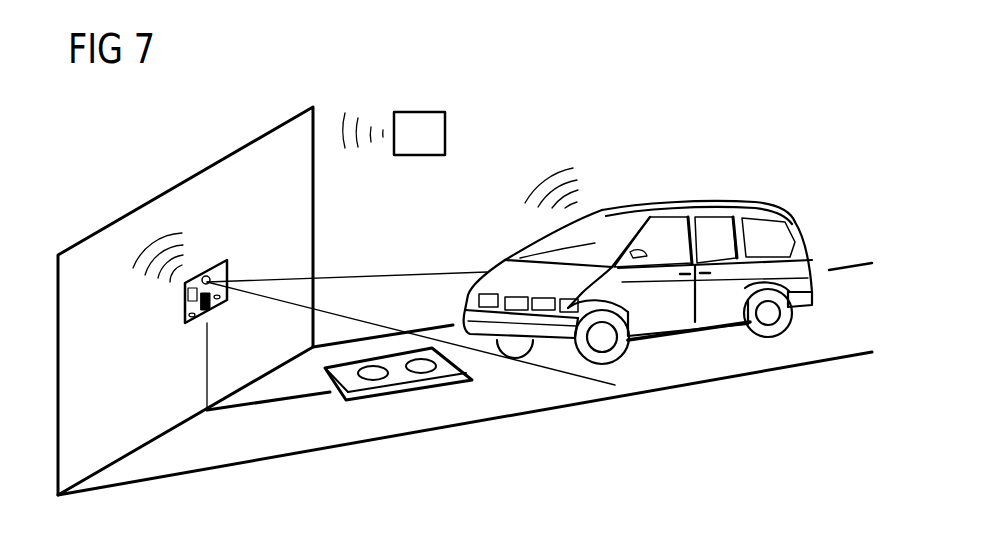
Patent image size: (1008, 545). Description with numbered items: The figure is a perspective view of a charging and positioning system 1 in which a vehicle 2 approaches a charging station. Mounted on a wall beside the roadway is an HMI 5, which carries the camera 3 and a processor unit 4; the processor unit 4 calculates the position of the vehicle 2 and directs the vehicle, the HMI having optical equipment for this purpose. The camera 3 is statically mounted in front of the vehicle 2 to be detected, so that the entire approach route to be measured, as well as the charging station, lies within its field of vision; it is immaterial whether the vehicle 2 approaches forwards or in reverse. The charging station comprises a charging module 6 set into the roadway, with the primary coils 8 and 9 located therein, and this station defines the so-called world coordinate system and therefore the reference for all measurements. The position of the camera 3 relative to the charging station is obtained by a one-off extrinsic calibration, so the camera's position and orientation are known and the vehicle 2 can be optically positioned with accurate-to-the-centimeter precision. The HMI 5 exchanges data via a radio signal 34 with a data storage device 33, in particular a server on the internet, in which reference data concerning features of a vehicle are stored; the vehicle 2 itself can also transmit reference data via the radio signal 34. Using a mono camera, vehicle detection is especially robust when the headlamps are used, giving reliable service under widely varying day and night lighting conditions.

The system for charging a vehicle 1 is at (666, 108).
The vehicle 2 is at (731, 203).
The camera 3 is at (206, 276).
The processor unit 4 is at (185, 298).
The HMI 5 is at (188, 325).
The charging module 6 is at (457, 380).
The primary coil 8 is at (373, 375).
The primary coil 9 is at (421, 368).
The data storage device 33 is at (445, 132).
The radio signal 34 is at (162, 233).